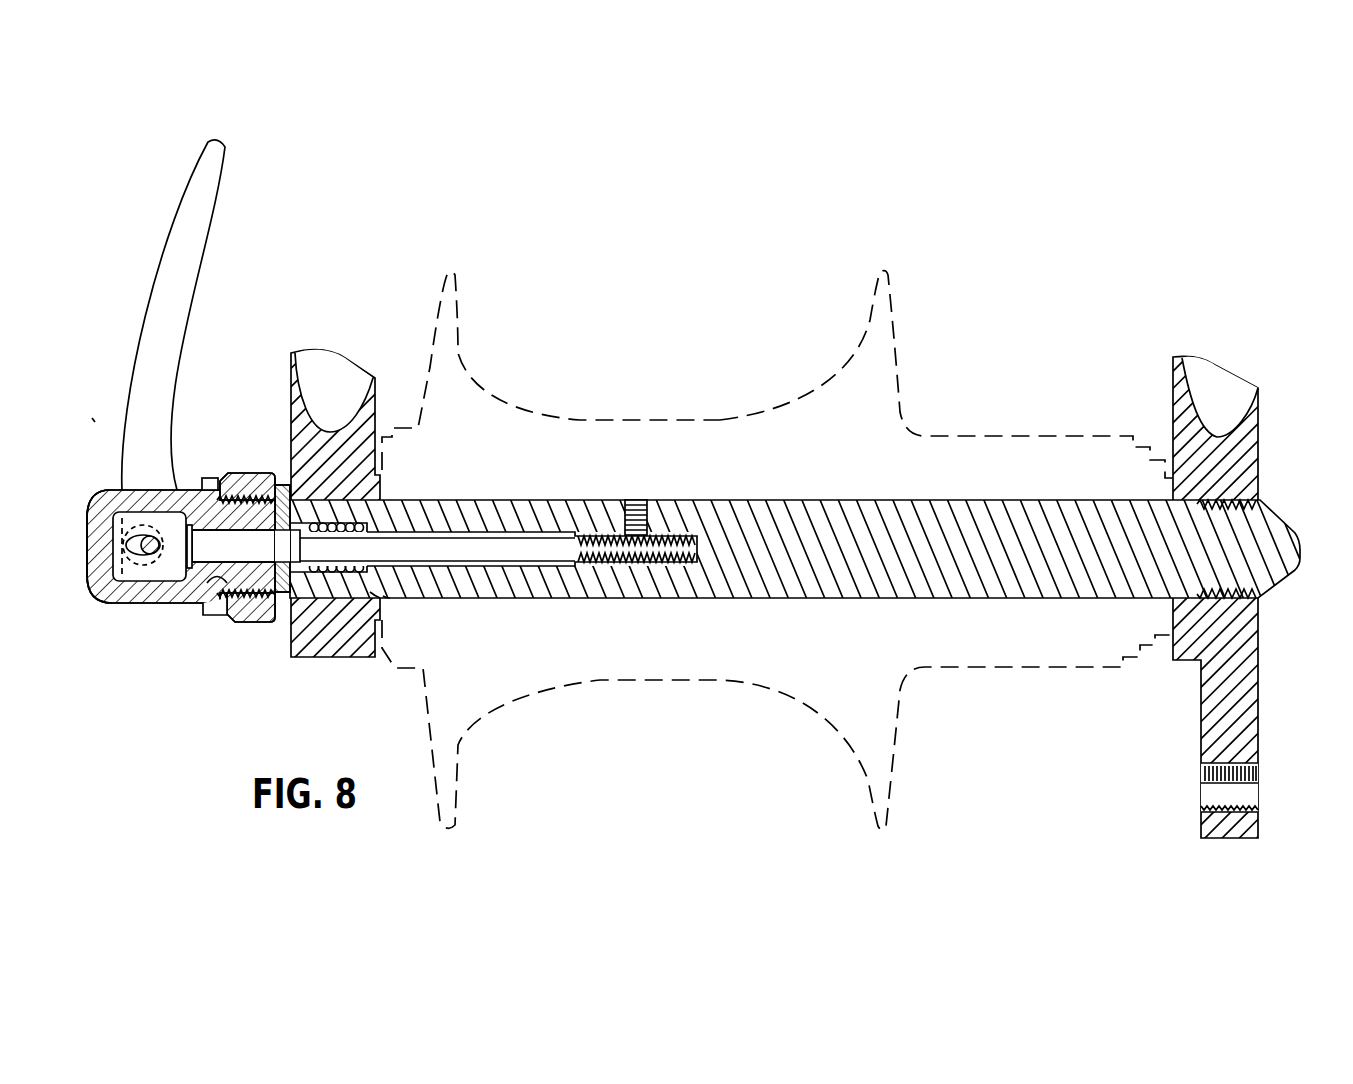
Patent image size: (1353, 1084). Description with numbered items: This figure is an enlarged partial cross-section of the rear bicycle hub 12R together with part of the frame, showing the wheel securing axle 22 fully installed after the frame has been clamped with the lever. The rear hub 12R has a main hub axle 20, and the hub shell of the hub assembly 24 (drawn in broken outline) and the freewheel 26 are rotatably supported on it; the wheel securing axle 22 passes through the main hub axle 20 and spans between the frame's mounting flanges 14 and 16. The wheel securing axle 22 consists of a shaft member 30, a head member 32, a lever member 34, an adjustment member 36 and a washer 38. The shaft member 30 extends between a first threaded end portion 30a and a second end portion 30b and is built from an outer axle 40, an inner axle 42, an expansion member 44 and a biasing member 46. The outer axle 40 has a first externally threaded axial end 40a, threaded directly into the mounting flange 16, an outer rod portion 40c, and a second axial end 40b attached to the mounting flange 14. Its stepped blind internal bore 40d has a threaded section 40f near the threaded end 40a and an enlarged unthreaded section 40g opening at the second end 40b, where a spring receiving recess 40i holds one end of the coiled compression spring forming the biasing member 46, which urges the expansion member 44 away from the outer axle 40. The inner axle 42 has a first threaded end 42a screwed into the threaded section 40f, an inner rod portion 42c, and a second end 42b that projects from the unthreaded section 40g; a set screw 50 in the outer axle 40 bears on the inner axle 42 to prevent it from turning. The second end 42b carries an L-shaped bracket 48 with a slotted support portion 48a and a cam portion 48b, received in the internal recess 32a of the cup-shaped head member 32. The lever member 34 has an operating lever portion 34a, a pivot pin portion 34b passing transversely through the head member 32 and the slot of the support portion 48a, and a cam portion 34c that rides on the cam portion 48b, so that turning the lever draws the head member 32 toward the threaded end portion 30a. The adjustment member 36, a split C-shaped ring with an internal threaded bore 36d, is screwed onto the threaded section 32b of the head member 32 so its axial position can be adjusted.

The rear bicycle hub 12R is at (998, 250).
The mounting flange 14 is at (330, 633).
The mounting flange 16 is at (1185, 646).
The main hub axle 20 is at (777, 550).
The wheel securing axle 22 is at (92, 415).
The hub assembly 24 is at (669, 420).
The freewheel 26 is at (1033, 436).
The shaft member 30 is at (792, 564).
The first threaded end portion 30a is at (1279, 600).
The second end portion 30b is at (318, 605).
The head member 32 is at (211, 559).
The internal recess 32a is at (256, 530).
The threaded section 32b is at (227, 478).
The lever member 34 is at (169, 363).
The operating lever portion 34a is at (172, 265).
The pivot pin portion 34b is at (127, 542).
The cam portion 34c is at (147, 527).
The adjustment member 36 is at (237, 543).
The threaded bore 36d is at (213, 592).
The washer 38 is at (285, 592).
The outer axle 40 is at (792, 534).
The first externally threaded axial end 40a is at (1245, 542).
The second axial end 40b is at (356, 454).
The outer rod portion 40c is at (768, 578).
The internal bore 40d is at (478, 540).
The threaded section 40f is at (627, 555).
The unthreaded section 40g is at (575, 536).
The spring receiving recess 40i is at (331, 520).
The inner axle 42 is at (501, 598).
The first threaded end 42a is at (673, 547).
The second end 42b is at (237, 547).
The inner rod portion 42c is at (503, 547).
The expansion member 44 is at (370, 592).
The biasing member 46 is at (385, 598).
The bracket 48 is at (138, 603).
The support portion 48a is at (152, 570).
The cam portion 48b is at (123, 565).
The set screw 50 is at (633, 500).